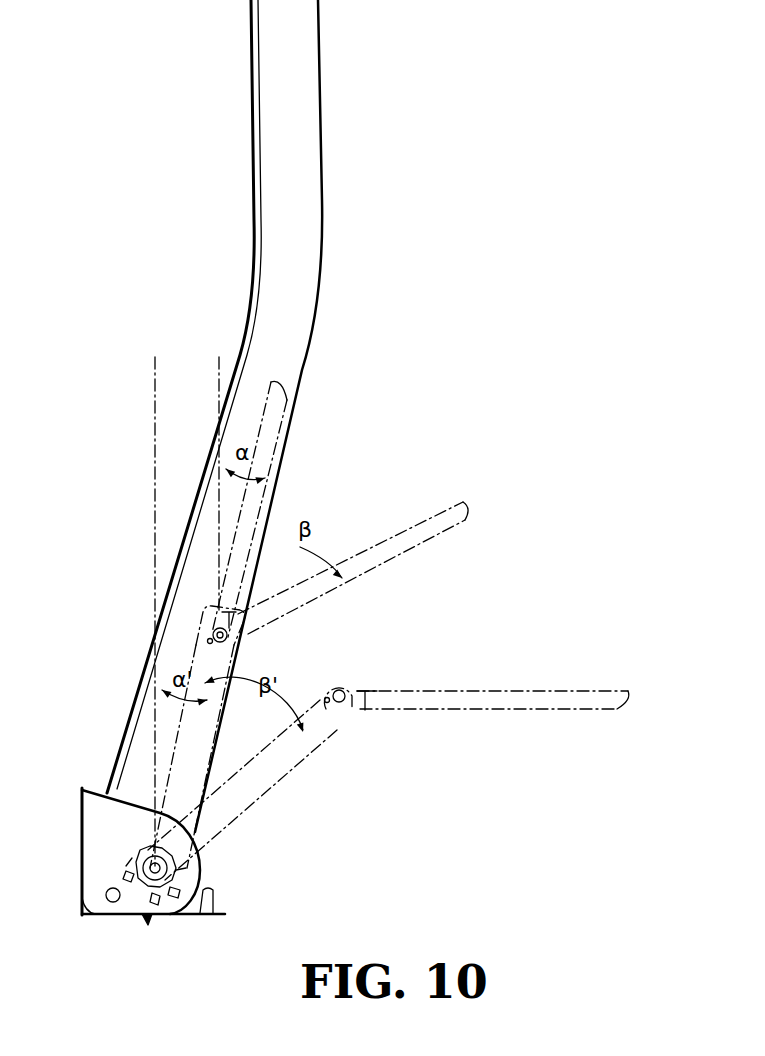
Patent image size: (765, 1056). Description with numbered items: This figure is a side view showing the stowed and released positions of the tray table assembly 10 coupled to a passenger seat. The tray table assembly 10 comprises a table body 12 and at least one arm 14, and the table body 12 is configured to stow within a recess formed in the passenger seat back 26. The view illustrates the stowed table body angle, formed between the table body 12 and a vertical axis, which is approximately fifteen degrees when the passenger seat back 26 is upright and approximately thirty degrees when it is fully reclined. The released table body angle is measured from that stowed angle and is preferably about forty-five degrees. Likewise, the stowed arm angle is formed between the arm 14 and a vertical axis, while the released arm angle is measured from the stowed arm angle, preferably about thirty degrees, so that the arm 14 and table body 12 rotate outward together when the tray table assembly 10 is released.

The tray table assembly 10 is at (323, 485).
The table body 12 is at (283, 413).
The arm 14 is at (285, 767).
The passenger seat back 26 is at (278, 328).